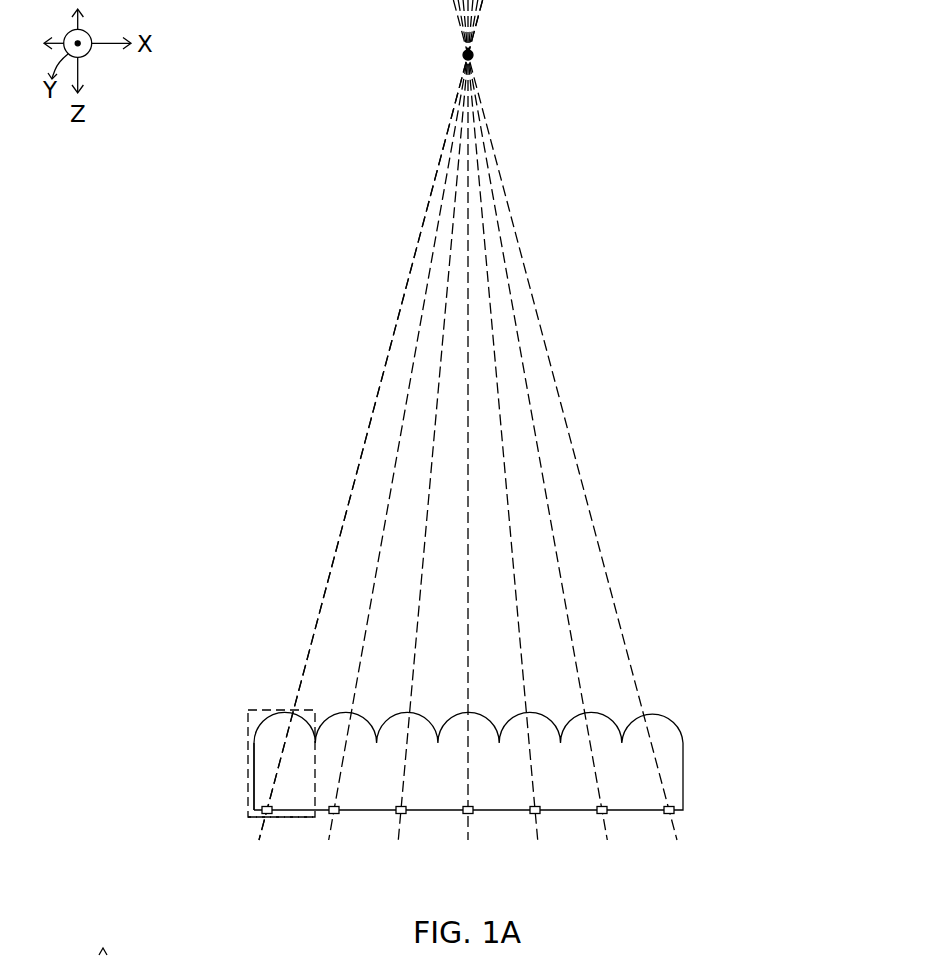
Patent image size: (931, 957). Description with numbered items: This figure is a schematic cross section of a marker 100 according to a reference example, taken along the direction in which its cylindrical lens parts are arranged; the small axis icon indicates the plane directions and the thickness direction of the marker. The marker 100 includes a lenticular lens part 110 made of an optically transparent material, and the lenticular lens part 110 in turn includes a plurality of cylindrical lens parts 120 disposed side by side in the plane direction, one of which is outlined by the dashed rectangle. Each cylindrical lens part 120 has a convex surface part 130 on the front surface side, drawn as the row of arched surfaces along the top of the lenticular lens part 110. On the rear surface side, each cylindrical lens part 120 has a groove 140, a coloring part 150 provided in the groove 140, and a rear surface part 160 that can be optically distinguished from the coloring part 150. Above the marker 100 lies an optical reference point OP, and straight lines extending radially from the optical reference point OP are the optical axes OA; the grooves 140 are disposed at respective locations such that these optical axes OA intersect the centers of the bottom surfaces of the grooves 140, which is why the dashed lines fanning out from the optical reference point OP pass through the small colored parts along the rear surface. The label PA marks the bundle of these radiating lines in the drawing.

The marker 100 is at (830, 605).
The lenticular lens part 110 is at (683, 767).
The cylindrical lens part 120 is at (247, 745).
The convex surface part 130 is at (259, 712).
The groove 140 is at (255, 797).
The coloring part 150 is at (263, 818).
The rear surface part 160 is at (297, 818).
The optical reference point OP is at (489, 57).
The optical axis OA is at (348, 500).
The principal axis PA is at (469, 441).